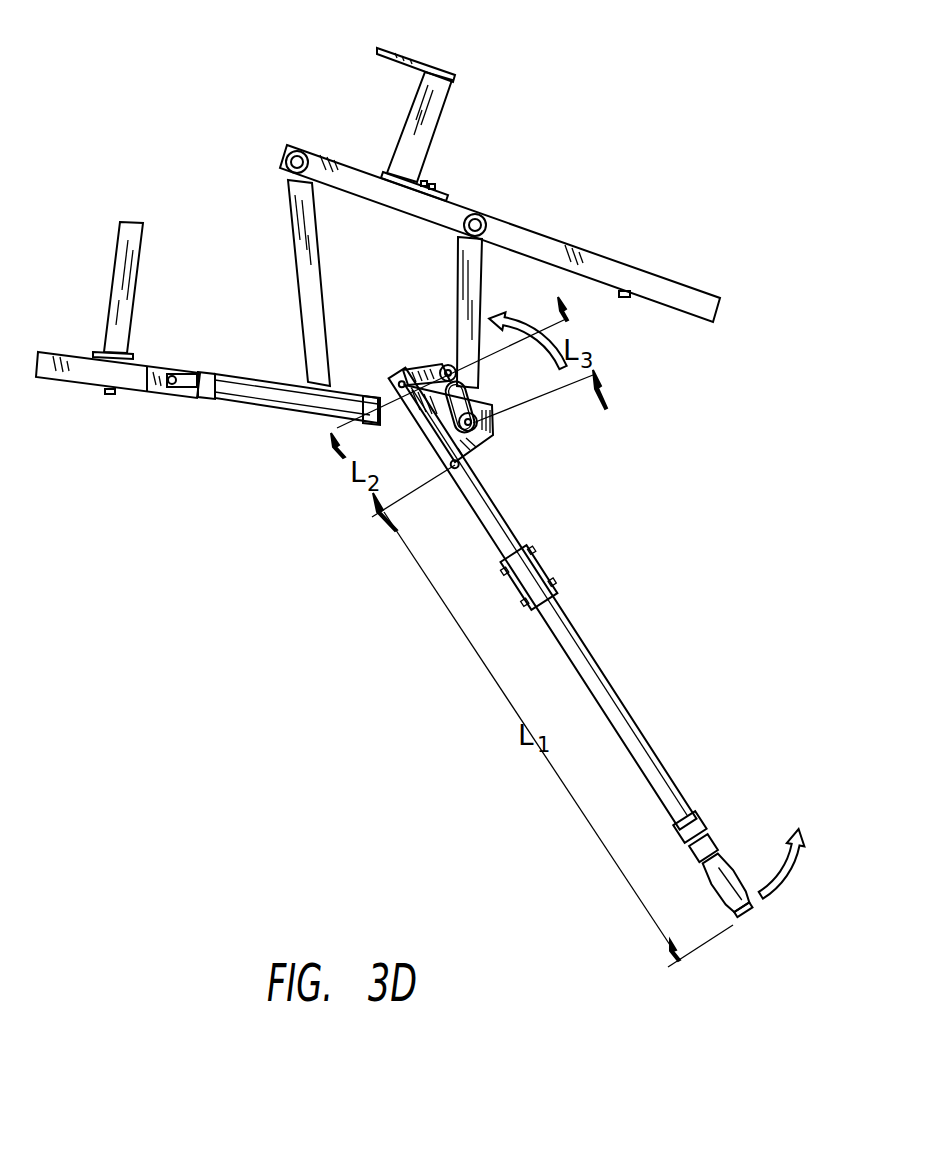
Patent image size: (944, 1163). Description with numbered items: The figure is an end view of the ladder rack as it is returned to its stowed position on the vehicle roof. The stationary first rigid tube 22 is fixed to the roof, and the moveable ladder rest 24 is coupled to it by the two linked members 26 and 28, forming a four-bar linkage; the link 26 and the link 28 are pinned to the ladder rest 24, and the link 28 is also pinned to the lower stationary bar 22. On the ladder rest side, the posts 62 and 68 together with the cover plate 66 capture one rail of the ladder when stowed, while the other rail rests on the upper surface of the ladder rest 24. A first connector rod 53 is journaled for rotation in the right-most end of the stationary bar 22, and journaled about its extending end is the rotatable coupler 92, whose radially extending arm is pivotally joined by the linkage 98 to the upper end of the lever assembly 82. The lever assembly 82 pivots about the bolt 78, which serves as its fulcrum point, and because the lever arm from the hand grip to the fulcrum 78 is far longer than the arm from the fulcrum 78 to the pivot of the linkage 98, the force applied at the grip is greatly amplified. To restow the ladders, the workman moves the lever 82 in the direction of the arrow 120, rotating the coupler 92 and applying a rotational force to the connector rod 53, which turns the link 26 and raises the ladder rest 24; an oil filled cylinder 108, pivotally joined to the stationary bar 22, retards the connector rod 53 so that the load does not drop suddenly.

The first rigid tube 22 is at (99, 380).
The second tubular bar 24 is at (587, 248).
The link 26 is at (462, 264).
The link 28 is at (305, 270).
The first connector rod 53 is at (478, 436).
The post 62 is at (433, 118).
The cover plate 66 is at (407, 57).
The post 68 is at (120, 272).
The bolt 78 is at (457, 468).
The lever assembly 82 is at (612, 545).
The rotatable coupler 92 is at (473, 404).
The linkage 98 is at (442, 368).
The oil filled cylinder 108 is at (230, 397).
The arrow 120 is at (785, 888).